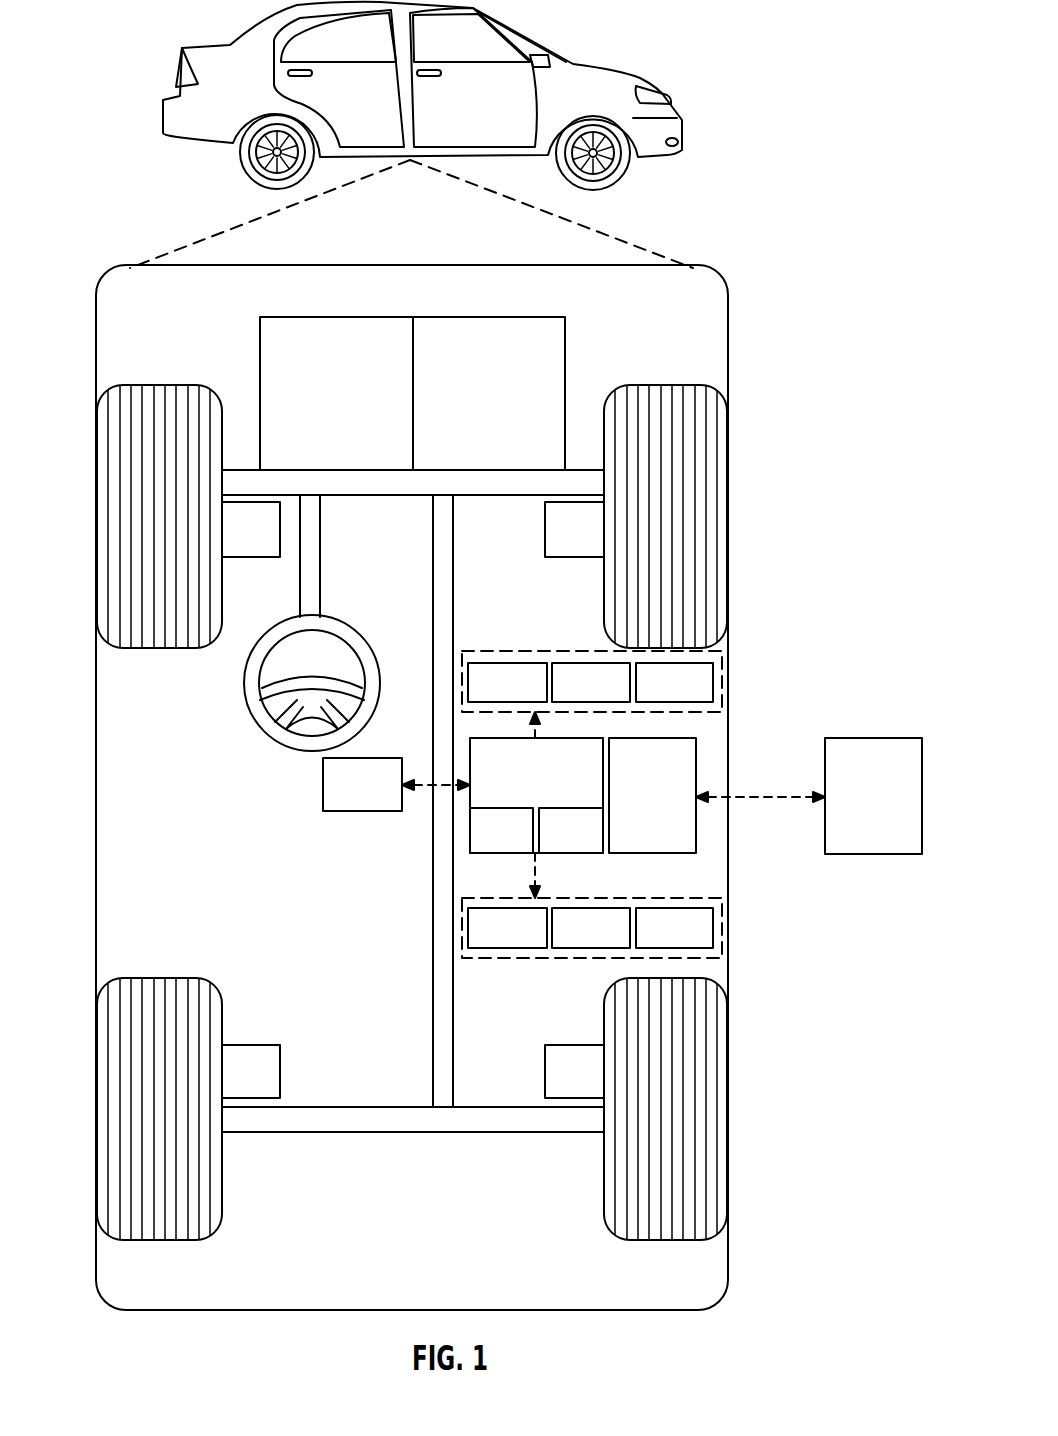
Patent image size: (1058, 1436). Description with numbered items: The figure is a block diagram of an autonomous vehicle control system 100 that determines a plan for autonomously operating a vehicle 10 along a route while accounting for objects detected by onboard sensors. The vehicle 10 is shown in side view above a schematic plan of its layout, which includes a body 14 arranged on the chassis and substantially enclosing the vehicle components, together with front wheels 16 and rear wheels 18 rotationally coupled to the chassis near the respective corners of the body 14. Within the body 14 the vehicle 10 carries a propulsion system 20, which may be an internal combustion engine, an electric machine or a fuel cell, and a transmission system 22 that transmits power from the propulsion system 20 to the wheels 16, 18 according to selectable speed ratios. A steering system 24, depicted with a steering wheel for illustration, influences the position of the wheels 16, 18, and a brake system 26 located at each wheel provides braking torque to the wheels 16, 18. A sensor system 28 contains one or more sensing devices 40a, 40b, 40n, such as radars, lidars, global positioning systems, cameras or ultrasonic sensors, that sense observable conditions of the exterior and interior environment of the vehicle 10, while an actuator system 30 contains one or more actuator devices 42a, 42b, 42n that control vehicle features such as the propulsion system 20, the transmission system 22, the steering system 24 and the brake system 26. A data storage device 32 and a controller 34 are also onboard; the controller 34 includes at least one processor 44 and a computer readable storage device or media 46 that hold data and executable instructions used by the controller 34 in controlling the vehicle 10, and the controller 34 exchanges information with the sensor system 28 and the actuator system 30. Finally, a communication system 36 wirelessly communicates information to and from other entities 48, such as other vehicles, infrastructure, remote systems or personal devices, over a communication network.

The vehicle 10 is at (173, 70).
The autonomous vehicle control system 100 is at (753, 173).
The body 14 is at (95, 750).
The front wheels 16 is at (160, 385).
The rear wheels 18 is at (158, 1242).
The propulsion system 20 is at (322, 411).
The transmission system 22 is at (475, 411).
The steering system 24 is at (355, 514).
The brake system 26 is at (237, 547).
The sensor system 28 is at (548, 650).
The actuator system 30 is at (553, 962).
The data storage device 32 is at (348, 802).
The controller 34 is at (522, 793).
The communication system 36 is at (638, 814).
The sensing device 40a is at (486, 700).
The sensing device 40b is at (570, 700).
The sensing device 40n is at (653, 700).
The actuator device 42a is at (486, 945).
The actuator device 42b is at (570, 945).
The actuator device 42n is at (653, 945).
The processor 44 is at (487, 847).
The computer readable storage device or media 46 is at (557, 847).
The other entities 48 is at (859, 814).